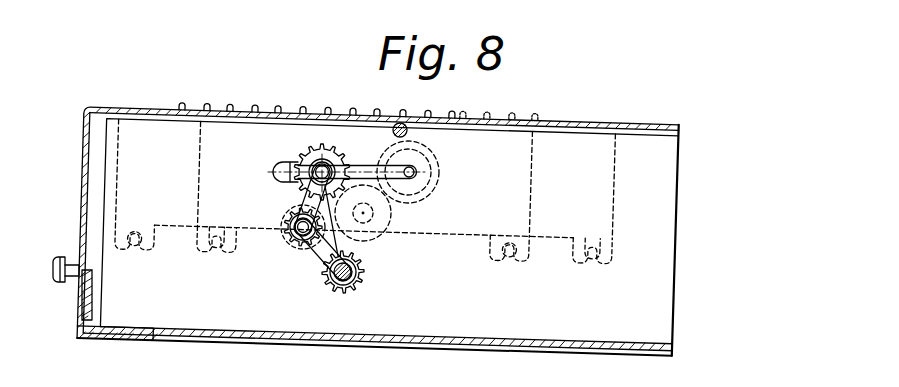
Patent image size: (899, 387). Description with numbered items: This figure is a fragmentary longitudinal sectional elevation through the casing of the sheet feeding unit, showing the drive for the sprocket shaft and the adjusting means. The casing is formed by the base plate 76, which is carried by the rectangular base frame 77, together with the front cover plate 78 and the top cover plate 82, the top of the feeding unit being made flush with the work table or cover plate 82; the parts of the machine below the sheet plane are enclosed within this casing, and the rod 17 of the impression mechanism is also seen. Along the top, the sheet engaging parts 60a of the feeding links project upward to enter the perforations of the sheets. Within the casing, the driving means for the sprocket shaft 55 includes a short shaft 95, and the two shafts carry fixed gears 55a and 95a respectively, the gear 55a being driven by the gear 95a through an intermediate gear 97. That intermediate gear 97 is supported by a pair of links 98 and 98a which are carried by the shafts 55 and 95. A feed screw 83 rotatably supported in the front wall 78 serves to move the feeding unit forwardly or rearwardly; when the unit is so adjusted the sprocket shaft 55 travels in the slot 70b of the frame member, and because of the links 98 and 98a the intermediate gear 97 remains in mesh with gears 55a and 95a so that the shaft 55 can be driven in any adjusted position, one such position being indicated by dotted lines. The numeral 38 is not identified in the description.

The rod 17 is at (404, 124).
The tray body 38 is at (160, 130).
The sprocket shaft 55 is at (333, 161).
The gear 55a is at (306, 150).
The sheet engaging parts 60a is at (351, 110).
The slot 70b is at (696, 300).
The base plate 76 is at (275, 340).
The base frame 77 is at (117, 341).
The front cover plate 78 is at (83, 131).
The top cover plate 82 is at (633, 124).
The feed screw 83 is at (51, 278).
The short shaft 95 is at (330, 281).
The gear 95a is at (370, 286).
The intermediate gear 97 is at (290, 241).
The link 98 is at (296, 189).
The link 98a is at (372, 240).